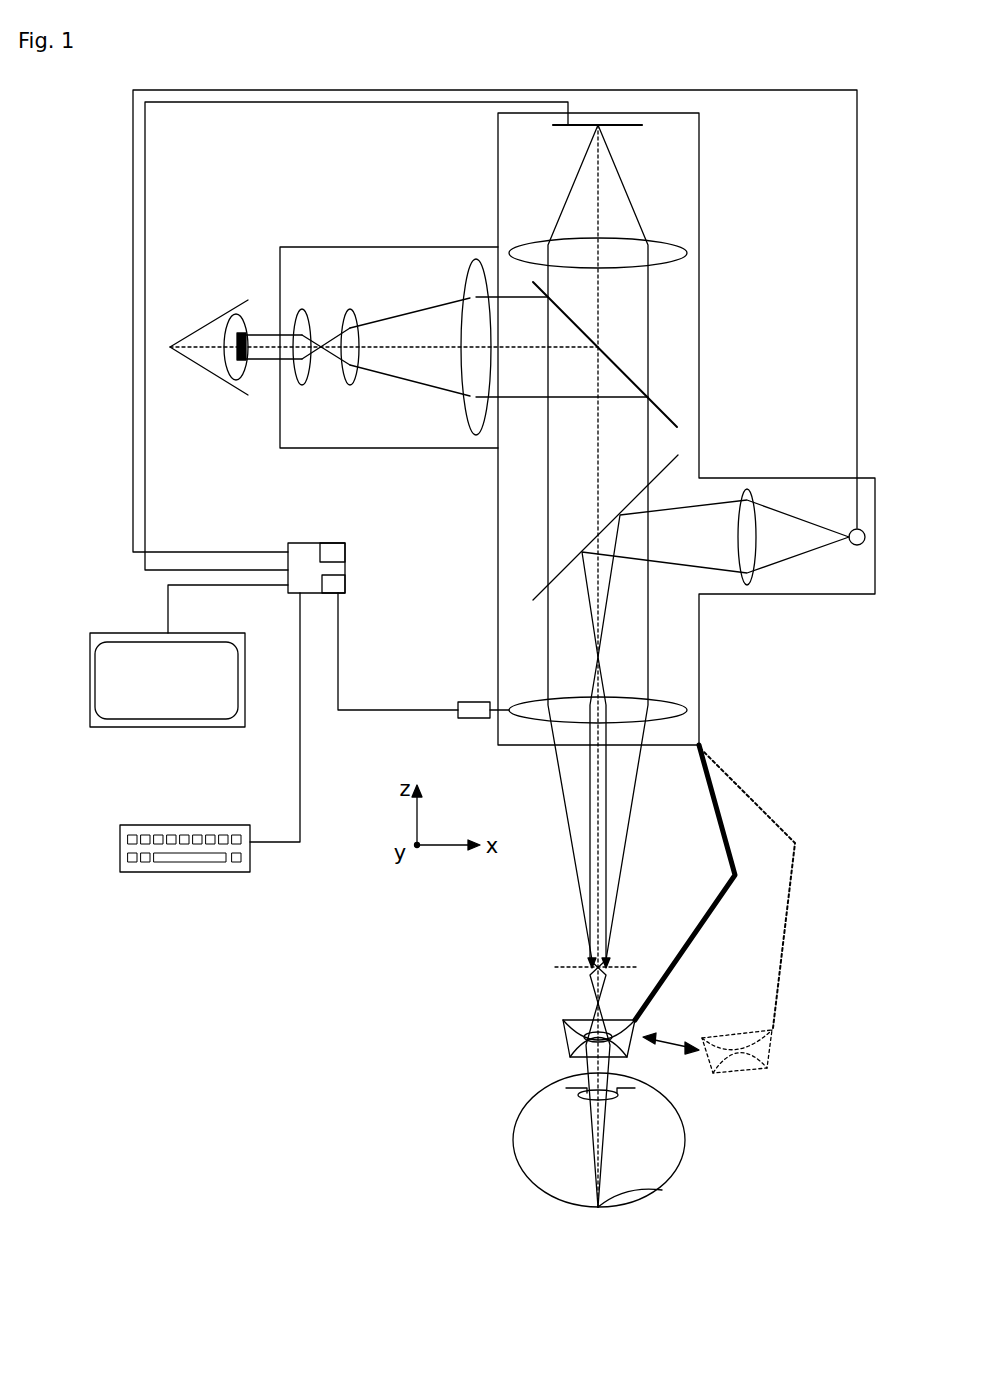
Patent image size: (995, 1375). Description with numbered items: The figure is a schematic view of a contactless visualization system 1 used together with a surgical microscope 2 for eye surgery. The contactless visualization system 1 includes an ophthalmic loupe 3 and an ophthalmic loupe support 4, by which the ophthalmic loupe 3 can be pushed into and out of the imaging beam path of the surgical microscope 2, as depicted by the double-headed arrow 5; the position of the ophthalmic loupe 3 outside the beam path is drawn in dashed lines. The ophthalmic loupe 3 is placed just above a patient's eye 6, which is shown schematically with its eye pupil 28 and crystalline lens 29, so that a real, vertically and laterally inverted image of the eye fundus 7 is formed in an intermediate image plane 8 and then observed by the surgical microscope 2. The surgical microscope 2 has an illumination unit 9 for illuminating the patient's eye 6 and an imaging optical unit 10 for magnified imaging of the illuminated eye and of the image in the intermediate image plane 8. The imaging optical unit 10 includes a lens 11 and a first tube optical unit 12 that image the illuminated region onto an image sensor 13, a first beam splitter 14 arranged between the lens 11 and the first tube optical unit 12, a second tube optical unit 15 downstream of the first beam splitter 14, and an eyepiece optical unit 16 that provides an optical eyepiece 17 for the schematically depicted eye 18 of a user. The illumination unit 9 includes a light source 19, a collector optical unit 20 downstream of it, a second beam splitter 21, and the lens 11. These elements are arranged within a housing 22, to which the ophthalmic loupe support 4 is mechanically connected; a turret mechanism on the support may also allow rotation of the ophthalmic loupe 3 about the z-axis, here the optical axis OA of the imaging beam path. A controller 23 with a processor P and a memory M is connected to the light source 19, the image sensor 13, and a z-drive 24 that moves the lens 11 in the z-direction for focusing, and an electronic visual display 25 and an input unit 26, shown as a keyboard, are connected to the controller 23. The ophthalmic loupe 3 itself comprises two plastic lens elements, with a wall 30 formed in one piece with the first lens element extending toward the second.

The contactless visualization system 1 is at (517, 1010).
The surgical microscope 2 is at (701, 260).
The ophthalmic loupe 3 is at (570, 1063).
The ophthalmic loupe support 4 is at (716, 912).
The double-headed arrow 5 is at (657, 1035).
The patient's eye 6 is at (685, 1130).
The eye fundus 7 is at (655, 1192).
The intermediate image plane 8 is at (562, 967).
The illumination unit 9 is at (795, 532).
The imaging optical unit 10 is at (656, 708).
The lens 11 is at (679, 702).
The first tube optical unit 12 is at (510, 245).
The image sensor 13 is at (626, 128).
The first beam splitter 14 is at (657, 408).
The second tube optical unit 15 is at (467, 280).
The eyepiece optical unit 16 is at (292, 300).
The optical eyepiece 17 is at (277, 352).
The eye of a user 18 is at (200, 333).
The light source 19 is at (857, 546).
The collector optical unit 20 is at (747, 586).
The second beam splitter 21 is at (537, 598).
The housing 22 is at (700, 165).
The controller 23 is at (313, 661).
The z-drive 24 is at (472, 702).
The electronic visual display 25 is at (165, 727).
The input unit 26 is at (151, 872).
The eye pupil 28 is at (625, 1086).
The crystalline lens 29 is at (580, 1097).
The wall 30 is at (566, 1036).
The processor P is at (345, 552).
The memory M is at (347, 580).
The optical axis OA is at (597, 435).